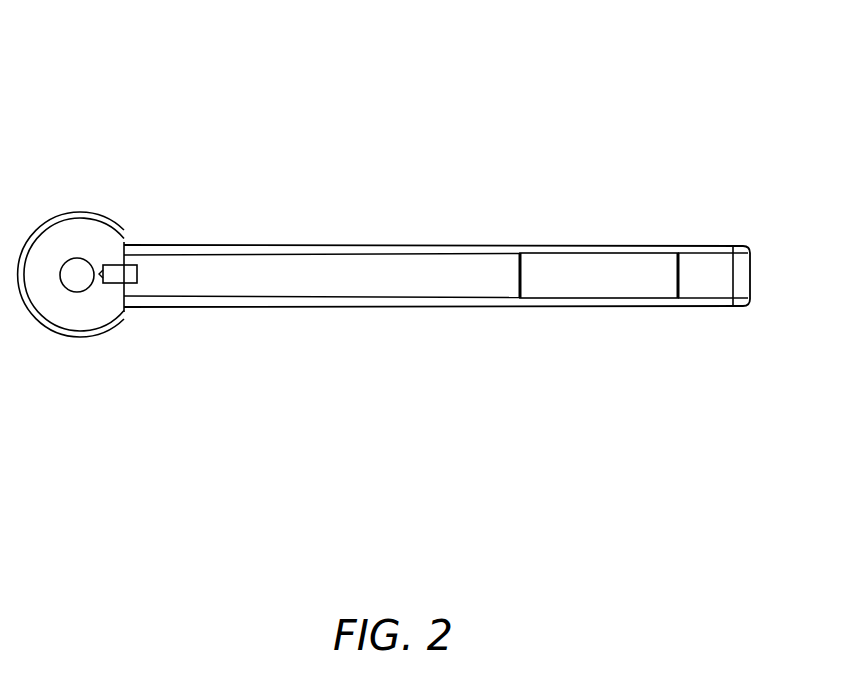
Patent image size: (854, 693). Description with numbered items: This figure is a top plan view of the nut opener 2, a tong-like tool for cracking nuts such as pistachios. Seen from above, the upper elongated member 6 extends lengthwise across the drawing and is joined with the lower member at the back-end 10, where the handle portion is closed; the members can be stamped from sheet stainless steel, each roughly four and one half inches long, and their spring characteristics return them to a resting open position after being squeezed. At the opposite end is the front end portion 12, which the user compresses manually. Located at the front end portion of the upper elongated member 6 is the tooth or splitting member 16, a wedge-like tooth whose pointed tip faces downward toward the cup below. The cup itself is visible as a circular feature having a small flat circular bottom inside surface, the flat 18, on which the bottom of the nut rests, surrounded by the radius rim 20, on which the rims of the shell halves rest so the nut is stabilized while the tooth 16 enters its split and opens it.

The nut opener 2 is at (484, 121).
The upper elongated member 6 is at (273, 273).
The back-end 10 is at (727, 303).
The front end portion 12 is at (172, 248).
The tooth or splitting member 16 is at (113, 268).
The flat 18 is at (77, 272).
The radius rim 20 is at (92, 215).